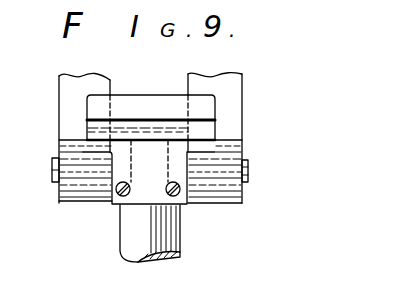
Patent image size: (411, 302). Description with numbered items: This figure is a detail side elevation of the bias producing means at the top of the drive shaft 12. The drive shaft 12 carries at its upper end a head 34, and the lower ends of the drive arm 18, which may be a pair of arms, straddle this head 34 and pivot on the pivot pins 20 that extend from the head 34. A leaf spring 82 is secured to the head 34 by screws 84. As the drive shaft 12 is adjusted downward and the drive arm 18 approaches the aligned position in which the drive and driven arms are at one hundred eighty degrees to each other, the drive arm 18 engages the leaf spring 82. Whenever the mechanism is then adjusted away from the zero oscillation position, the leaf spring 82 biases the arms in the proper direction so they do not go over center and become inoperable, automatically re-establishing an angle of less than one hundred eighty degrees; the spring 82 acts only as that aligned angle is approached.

The drive shaft 12 is at (155, 228).
The drive arm 18 is at (67, 97).
The pivot pins 20 is at (244, 168).
The head 34 is at (113, 205).
The leaf spring 82 is at (140, 103).
The screws 84 is at (123, 207).